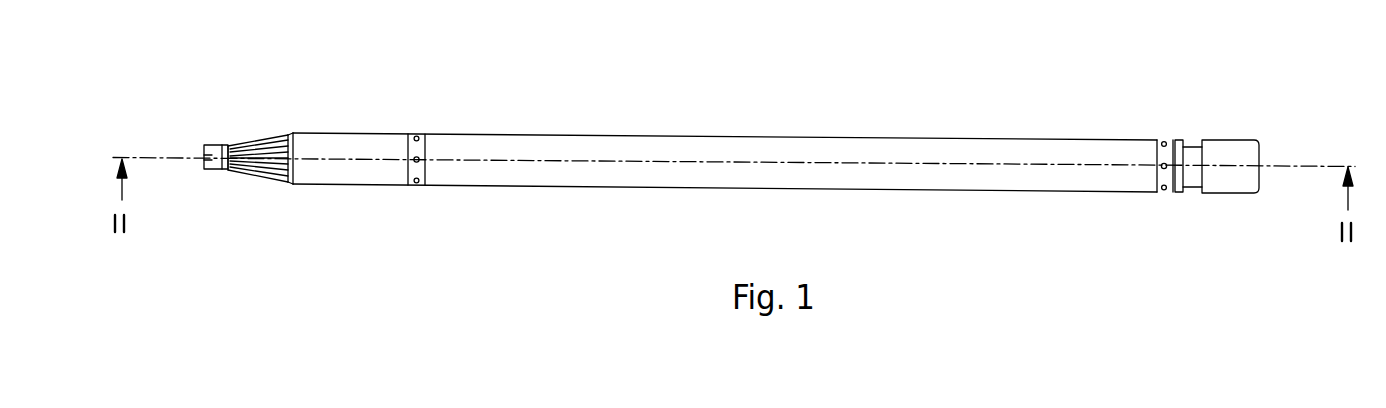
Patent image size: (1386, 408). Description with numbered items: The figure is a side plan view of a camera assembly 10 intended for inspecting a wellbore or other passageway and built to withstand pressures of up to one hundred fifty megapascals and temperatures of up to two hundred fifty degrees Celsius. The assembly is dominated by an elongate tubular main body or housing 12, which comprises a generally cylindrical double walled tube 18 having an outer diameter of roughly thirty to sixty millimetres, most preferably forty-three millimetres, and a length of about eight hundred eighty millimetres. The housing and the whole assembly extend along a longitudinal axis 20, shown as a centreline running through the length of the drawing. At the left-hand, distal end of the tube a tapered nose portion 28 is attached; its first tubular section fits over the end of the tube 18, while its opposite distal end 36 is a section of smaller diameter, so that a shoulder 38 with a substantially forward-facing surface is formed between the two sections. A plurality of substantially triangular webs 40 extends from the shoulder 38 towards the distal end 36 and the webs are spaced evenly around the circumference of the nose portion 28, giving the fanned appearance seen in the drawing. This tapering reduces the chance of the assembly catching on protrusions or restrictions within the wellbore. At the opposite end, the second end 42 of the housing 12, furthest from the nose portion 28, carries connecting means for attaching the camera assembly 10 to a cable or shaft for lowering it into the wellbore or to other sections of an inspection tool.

The camera assembly 10 is at (919, 105).
The housing 12 is at (655, 142).
The double walled tube 18 is at (842, 180).
The longitudinal axis 20 is at (1283, 167).
The nose portion 28 is at (259, 181).
The distal end 36 is at (205, 170).
The shoulder 38 is at (282, 180).
The triangular webs 40 is at (268, 140).
The second end 42 is at (1248, 193).